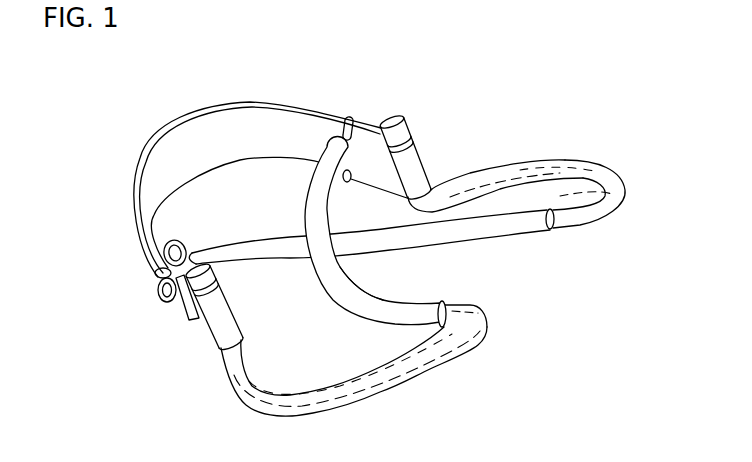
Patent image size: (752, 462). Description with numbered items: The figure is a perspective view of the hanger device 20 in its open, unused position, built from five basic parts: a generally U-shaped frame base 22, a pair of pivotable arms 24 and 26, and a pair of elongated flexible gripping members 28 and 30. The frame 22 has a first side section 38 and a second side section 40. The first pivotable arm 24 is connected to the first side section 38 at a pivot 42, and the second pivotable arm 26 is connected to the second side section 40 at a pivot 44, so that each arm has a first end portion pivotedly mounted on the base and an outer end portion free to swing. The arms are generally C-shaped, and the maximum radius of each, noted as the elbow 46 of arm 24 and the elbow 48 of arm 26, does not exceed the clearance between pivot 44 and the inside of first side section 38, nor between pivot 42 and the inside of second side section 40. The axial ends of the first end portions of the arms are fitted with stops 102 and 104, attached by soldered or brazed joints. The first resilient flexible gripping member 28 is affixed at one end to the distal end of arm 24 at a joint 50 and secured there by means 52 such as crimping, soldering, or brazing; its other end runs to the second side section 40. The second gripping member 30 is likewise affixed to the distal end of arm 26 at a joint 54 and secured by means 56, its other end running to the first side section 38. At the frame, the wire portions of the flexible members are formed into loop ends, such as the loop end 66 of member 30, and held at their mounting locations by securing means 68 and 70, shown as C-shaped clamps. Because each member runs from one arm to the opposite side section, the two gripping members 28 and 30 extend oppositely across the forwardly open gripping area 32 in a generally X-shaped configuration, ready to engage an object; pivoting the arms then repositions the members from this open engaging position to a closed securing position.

The hanger device 20 is at (138, 119).
The frame base 22 is at (243, 99).
The first pivotable arm 24 is at (543, 192).
The second pivotable arm 26 is at (388, 367).
The first elongated flexible gripping member 28 is at (230, 236).
The second elongated flexible gripping member 30 is at (375, 232).
The gripping area 32 is at (361, 266).
The first side section 38 is at (421, 130).
The second side section 40 is at (182, 331).
The pivot 42 is at (419, 195).
The pivot 44 is at (232, 344).
The elbow 46 is at (589, 194).
The elbow 48 is at (465, 316).
The joint 50 is at (548, 232).
The securing means 52 is at (608, 208).
The joint 54 is at (442, 301).
The securing means 56 is at (486, 307).
The loop end 66 is at (156, 268).
The securing means 68 is at (340, 110).
The securing means 70 is at (149, 299).
The stop 102 is at (392, 121).
The stop 104 is at (182, 314).